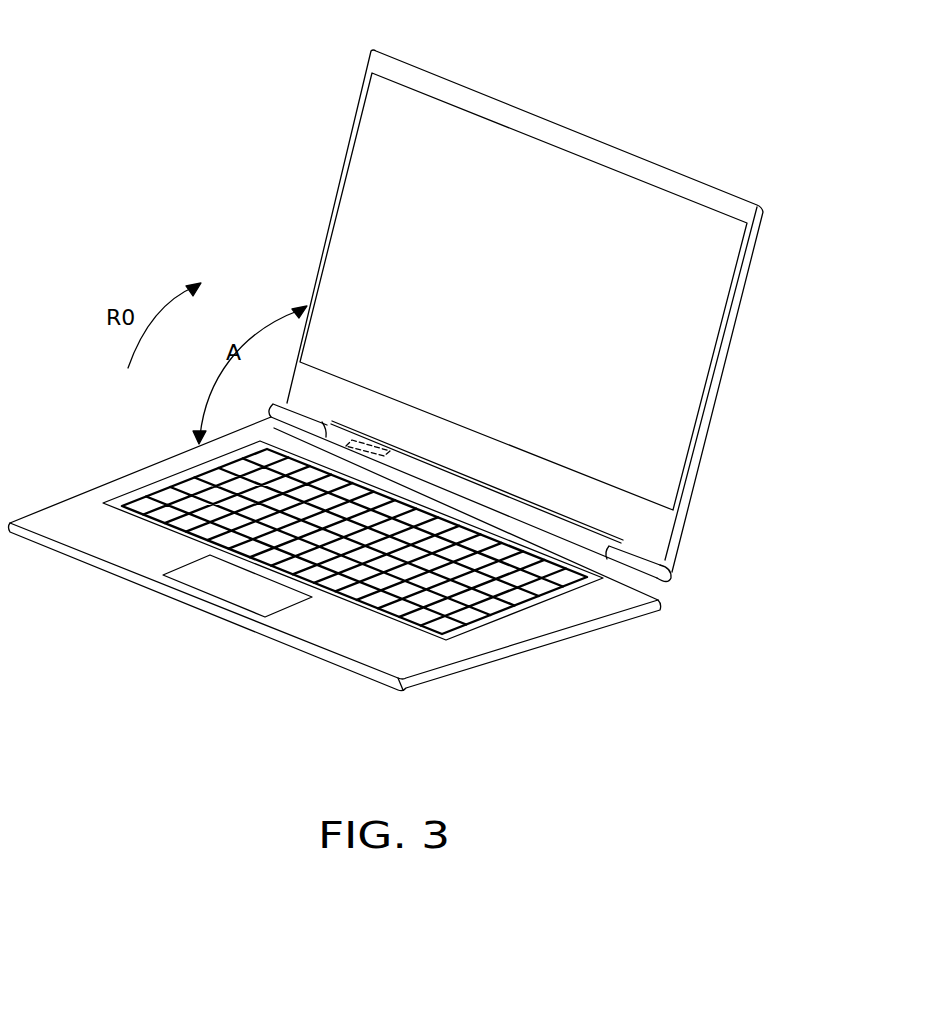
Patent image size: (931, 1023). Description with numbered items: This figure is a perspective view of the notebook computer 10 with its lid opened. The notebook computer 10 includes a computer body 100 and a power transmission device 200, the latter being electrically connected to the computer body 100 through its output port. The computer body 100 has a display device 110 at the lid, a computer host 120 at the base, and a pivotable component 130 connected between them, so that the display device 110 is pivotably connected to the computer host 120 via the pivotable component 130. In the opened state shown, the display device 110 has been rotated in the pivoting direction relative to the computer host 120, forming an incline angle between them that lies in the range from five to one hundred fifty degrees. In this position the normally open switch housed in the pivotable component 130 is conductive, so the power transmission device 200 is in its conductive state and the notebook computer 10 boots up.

The notebook computer 10 is at (110, 66).
The computer body 100 is at (813, 541).
The display device 110 is at (655, 458).
The computer host 120 is at (560, 627).
The pivotable component 130 is at (667, 571).
The power transmission device 200 is at (371, 446).